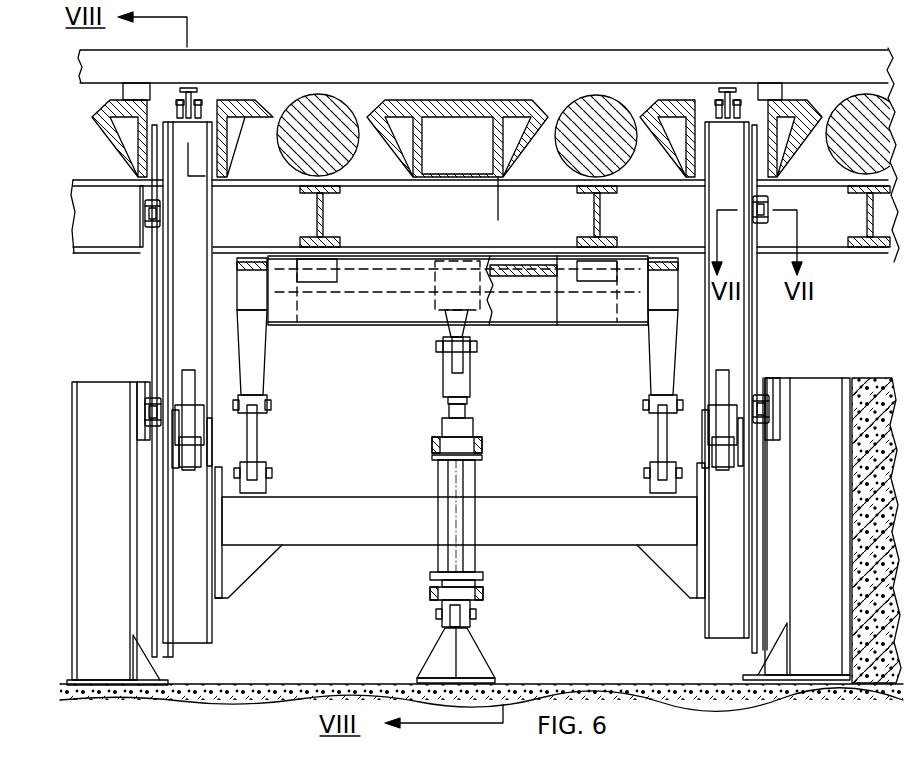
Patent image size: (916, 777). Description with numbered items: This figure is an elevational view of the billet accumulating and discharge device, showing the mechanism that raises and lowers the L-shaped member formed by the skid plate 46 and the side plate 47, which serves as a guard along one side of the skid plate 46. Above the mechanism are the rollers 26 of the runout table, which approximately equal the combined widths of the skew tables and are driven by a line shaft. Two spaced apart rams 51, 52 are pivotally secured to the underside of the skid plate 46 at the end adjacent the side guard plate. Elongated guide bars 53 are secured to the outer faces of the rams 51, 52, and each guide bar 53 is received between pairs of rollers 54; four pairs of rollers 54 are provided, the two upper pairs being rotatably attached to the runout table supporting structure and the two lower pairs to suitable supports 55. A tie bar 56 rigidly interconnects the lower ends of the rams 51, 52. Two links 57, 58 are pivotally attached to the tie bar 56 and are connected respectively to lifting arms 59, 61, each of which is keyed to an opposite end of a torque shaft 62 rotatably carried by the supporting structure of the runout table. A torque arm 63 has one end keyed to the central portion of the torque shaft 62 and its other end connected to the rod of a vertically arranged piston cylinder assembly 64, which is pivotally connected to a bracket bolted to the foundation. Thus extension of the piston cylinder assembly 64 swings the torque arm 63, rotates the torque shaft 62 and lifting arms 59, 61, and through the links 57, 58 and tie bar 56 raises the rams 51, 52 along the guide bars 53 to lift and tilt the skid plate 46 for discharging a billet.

The rollers 26 is at (347, 156).
The skid plate 46 is at (545, 83).
The side plate 47 is at (727, 76).
The ram 51 is at (200, 344).
The ram 52 is at (740, 344).
The guide bar 53 is at (157, 320).
The rollers 54 is at (160, 210).
The supports 55 is at (105, 549).
The tie bar 56 is at (526, 539).
The link 57 is at (255, 446).
The link 58 is at (660, 437).
The lifting arm 59 is at (254, 364).
The lifting arm 61 is at (657, 356).
The torque shaft 62 is at (518, 280).
The torque arm 63 is at (457, 330).
The piston cylinder assembly 64 is at (470, 478).